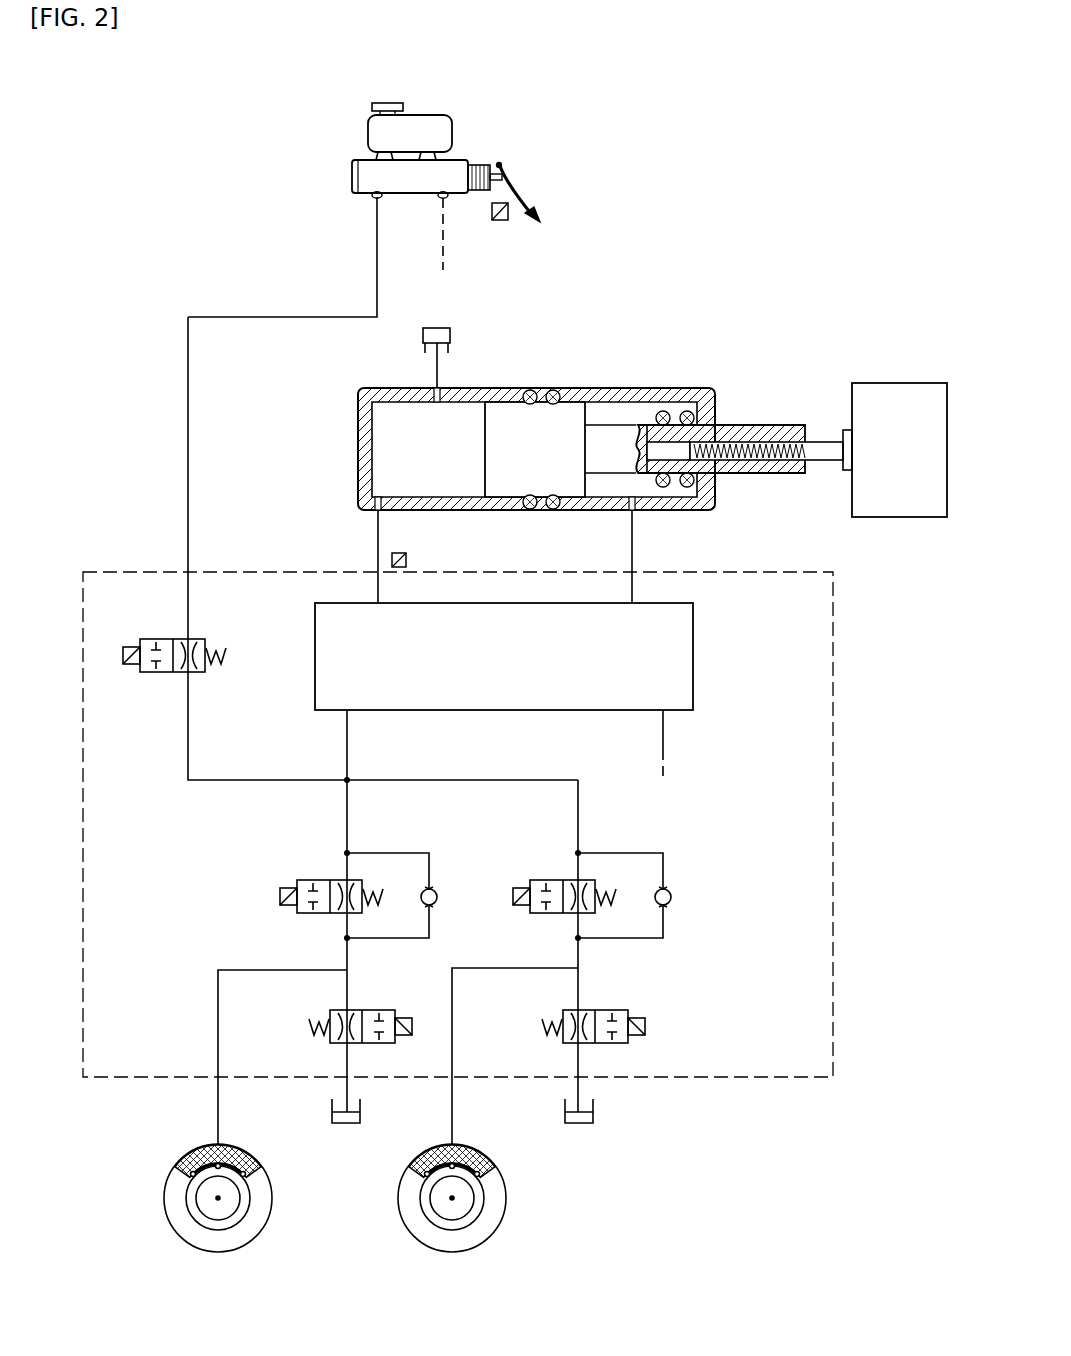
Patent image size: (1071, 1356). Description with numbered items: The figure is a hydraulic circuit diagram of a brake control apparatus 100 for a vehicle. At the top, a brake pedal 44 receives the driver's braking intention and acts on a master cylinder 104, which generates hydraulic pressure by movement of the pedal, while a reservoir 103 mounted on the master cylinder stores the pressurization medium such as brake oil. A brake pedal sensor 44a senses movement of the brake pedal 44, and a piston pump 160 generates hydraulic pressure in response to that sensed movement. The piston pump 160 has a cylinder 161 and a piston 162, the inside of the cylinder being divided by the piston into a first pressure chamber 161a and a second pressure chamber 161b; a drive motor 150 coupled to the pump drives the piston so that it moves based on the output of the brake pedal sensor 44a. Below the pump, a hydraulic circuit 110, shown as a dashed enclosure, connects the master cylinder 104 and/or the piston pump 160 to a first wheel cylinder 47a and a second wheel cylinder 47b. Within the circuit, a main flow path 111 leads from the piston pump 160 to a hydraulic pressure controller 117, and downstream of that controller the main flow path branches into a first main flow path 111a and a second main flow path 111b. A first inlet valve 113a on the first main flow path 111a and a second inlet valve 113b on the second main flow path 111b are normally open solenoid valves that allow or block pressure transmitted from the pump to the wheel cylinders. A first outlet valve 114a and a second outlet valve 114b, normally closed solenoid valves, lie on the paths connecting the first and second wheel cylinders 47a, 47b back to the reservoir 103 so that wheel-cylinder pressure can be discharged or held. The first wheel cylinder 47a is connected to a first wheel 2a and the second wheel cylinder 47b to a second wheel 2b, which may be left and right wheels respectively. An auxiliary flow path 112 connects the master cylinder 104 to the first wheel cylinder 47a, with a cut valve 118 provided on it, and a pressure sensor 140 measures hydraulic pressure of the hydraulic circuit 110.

The brake control apparatus 100 is at (148, 266).
The reservoir 103 is at (433, 118).
The master cylinder 104 is at (352, 178).
The brake pedal 44 is at (510, 185).
The brake pedal sensor 44a is at (500, 221).
The piston pump 160 is at (607, 427).
The cylinder 161 is at (493, 388).
The piston 162 is at (570, 410).
The first pressure chamber 161a is at (400, 445).
The second pressure chamber 161b is at (623, 478).
The drive motor 150 is at (887, 392).
The auxiliary flow path 112 is at (188, 410).
The hydraulic circuit 110 is at (143, 572).
The main flow path 111 is at (378, 540).
The pressure sensor 140 is at (408, 560).
The cut valve 118 is at (150, 639).
The hydraulic pressure controller 117 is at (693, 645).
The first inlet valve 113a is at (308, 880).
The second inlet valve 113b is at (540, 880).
The first main flow path 111a is at (218, 1000).
The second main flow path 111b is at (460, 965).
The first outlet valve 114a is at (387, 1010).
The second outlet valve 114b is at (620, 1010).
The first wheel cylinder 47a is at (240, 1145).
The second wheel cylinder 47b is at (474, 1145).
The first wheel 2a is at (216, 1252).
The second wheel 2b is at (450, 1252).